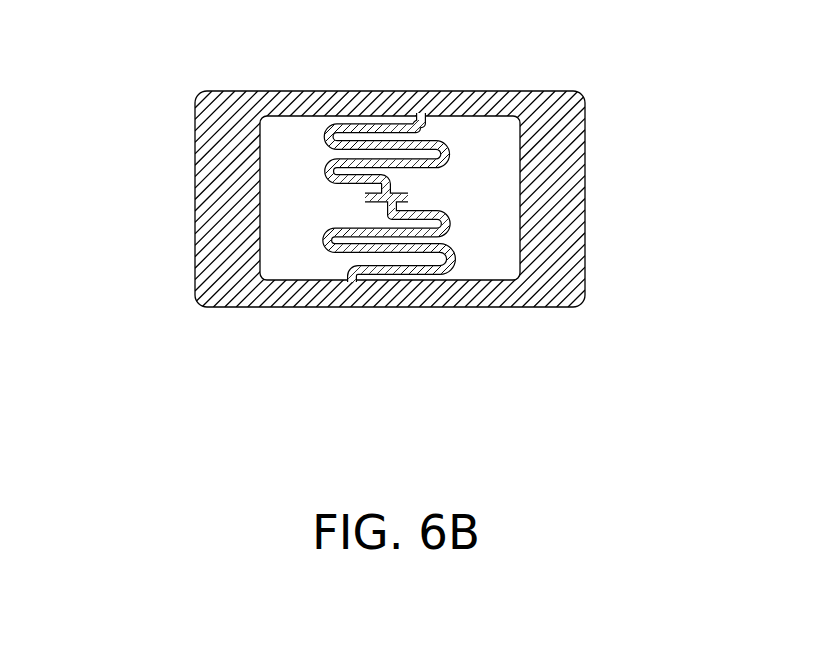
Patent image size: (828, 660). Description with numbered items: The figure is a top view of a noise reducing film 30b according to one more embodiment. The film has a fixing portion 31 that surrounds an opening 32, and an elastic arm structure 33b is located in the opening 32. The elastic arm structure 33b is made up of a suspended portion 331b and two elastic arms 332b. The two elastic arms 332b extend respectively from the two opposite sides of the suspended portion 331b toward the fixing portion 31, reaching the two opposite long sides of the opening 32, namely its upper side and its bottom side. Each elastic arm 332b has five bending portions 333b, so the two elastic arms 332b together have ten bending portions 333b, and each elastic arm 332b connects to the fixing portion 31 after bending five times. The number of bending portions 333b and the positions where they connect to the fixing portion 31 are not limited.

The noise reducing film 30b is at (370, 219).
The fixing portion 31 is at (568, 207).
The opening 32 is at (513, 117).
The elastic arm structure 33b is at (389, 222).
The suspended portion 331b is at (388, 201).
The elastic arm 332b is at (378, 262).
The bending portion 333b is at (325, 173).